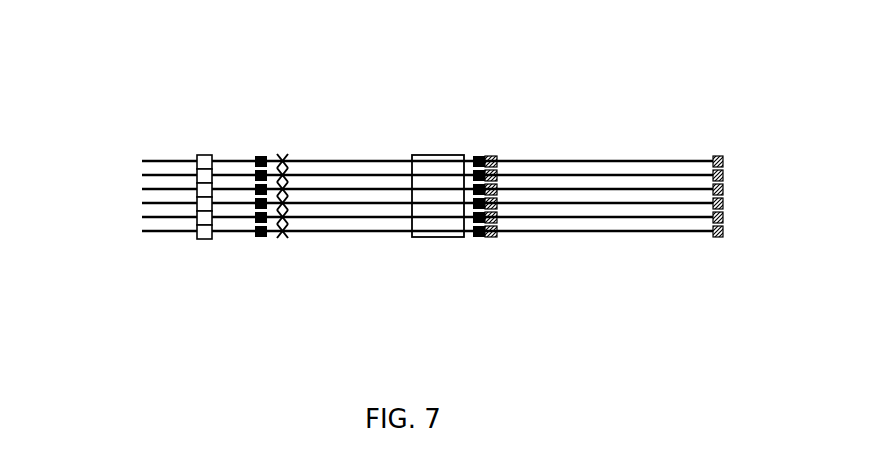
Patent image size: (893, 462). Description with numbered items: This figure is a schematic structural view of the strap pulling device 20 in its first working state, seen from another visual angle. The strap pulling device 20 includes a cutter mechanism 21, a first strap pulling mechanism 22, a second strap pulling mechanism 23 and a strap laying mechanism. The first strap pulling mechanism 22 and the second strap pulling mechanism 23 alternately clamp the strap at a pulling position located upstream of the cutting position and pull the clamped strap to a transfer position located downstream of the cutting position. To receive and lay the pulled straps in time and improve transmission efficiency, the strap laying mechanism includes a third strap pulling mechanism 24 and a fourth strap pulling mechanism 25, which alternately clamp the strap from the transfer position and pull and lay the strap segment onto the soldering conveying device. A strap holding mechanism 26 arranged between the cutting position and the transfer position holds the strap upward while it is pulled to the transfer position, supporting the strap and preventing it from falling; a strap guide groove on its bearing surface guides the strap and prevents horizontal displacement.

The strap pulling device 20 is at (163, 101).
The cutter mechanism 21 is at (273, 237).
The first strap pulling mechanism 22 is at (478, 157).
The second strap pulling mechanism 23 is at (268, 157).
The third strap pulling mechanism 24 is at (498, 157).
The fourth strap pulling mechanism 25 is at (717, 157).
The strap holding mechanism 26 is at (435, 239).